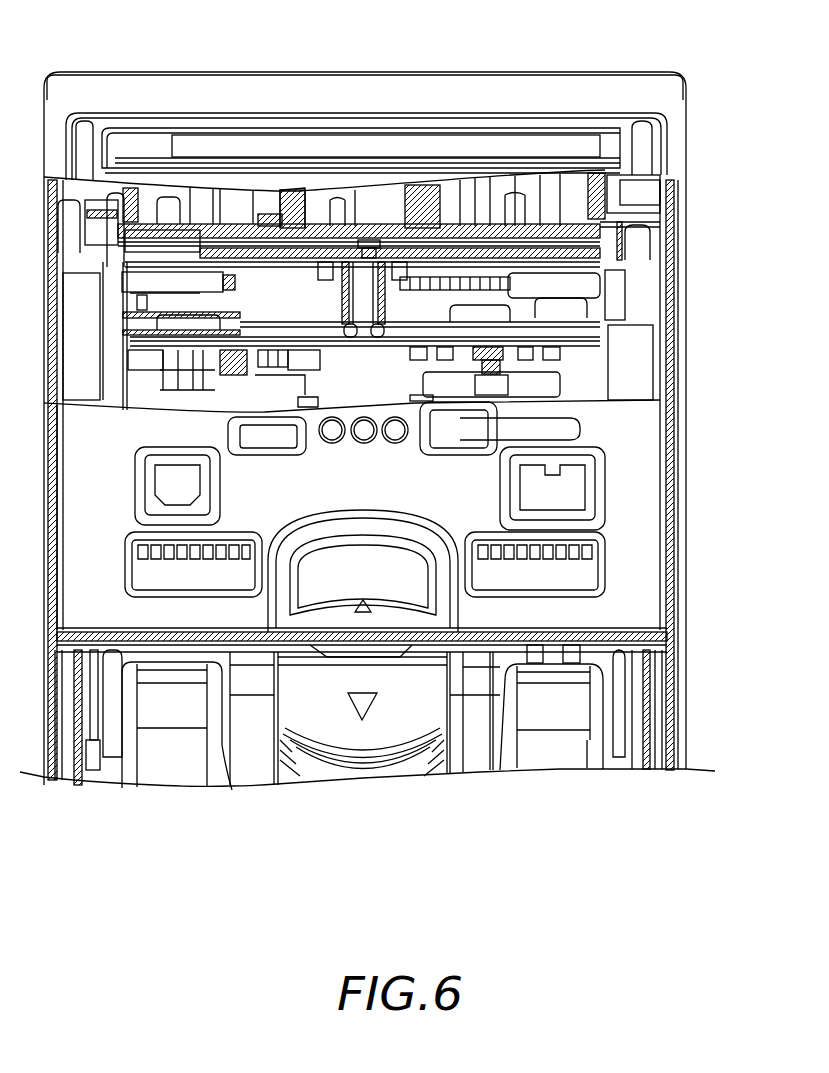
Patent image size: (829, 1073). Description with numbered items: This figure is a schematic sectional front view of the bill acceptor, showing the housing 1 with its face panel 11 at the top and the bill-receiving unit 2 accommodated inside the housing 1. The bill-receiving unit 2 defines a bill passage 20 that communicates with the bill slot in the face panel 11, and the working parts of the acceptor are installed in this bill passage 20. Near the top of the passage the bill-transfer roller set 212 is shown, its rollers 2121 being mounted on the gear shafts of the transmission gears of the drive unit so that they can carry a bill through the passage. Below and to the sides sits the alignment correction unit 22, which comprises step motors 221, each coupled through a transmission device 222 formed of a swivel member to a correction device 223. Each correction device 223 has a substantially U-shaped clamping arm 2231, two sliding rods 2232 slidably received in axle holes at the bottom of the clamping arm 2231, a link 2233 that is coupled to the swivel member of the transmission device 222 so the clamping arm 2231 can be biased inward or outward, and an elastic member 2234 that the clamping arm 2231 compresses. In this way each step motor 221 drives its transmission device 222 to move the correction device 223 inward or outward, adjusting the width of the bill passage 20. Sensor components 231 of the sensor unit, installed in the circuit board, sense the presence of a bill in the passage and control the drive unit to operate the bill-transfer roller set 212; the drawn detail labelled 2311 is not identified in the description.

The housing 1 is at (90, 60).
The face panel 11 is at (153, 82).
The bill-receiving unit 2 is at (41, 322).
The bill passage 20 is at (308, 240).
The bill-transfer roller set 212 is at (240, 240).
The rollers 2121 is at (368, 246).
The alignment correction unit 22 is at (758, 218).
The step motor 221 is at (530, 345).
The transmission device 222 is at (503, 327).
The correction device 223 is at (724, 208).
The U-shaped clamping arm 2231 is at (660, 227).
The sliding rods 2232 is at (482, 277).
The link 2233 is at (500, 298).
The elastic member 2234 is at (505, 256).
The sensor components 231 is at (167, 335).
The support posts 2311 is at (379, 337).